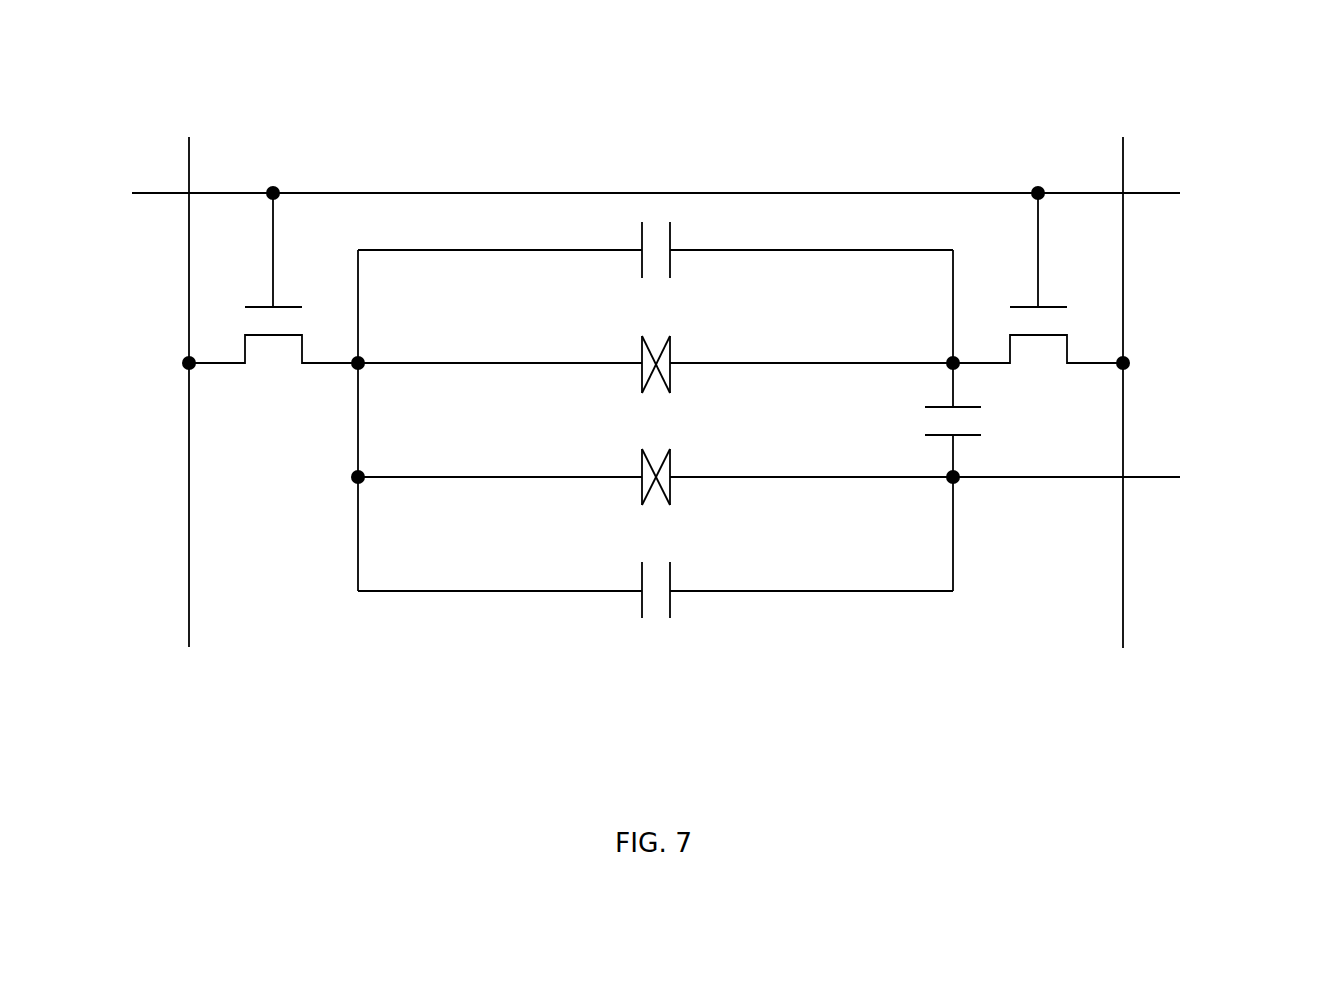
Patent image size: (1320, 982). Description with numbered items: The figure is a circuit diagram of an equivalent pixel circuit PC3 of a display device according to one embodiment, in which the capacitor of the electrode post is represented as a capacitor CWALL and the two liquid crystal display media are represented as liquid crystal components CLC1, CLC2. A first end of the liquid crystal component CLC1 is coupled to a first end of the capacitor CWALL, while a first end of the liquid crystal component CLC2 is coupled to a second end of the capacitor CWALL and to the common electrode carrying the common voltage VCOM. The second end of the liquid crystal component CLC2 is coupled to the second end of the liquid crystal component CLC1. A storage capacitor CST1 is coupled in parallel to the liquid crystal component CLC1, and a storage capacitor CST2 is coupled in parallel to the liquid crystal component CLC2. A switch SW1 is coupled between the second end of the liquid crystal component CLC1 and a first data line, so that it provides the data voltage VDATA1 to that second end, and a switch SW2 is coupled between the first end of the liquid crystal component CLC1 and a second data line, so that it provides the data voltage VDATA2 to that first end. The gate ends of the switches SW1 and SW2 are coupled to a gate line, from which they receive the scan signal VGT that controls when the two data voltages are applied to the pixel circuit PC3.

The equivalent pixel circuit PC3 is at (82, 91).
The data voltage VDATA1 is at (211, 373).
The data voltage VDATA2 is at (1145, 372).
The scan signal VGT is at (629, 195).
The common voltage VCOM is at (1109, 478).
The switch SW1 is at (273, 298).
The switch SW2 is at (1038, 297).
The storage capacitor CST1 is at (655, 245).
The storage capacitor CST2 is at (655, 585).
The liquid crystal component CLC1 is at (655, 358).
The liquid crystal component CLC2 is at (655, 472).
The capacitor CWALL is at (907, 421).